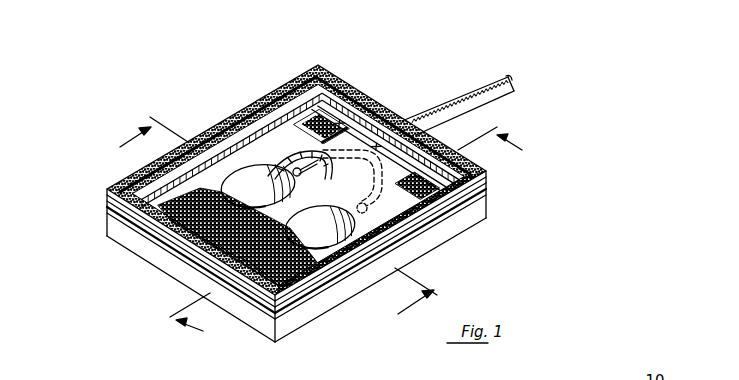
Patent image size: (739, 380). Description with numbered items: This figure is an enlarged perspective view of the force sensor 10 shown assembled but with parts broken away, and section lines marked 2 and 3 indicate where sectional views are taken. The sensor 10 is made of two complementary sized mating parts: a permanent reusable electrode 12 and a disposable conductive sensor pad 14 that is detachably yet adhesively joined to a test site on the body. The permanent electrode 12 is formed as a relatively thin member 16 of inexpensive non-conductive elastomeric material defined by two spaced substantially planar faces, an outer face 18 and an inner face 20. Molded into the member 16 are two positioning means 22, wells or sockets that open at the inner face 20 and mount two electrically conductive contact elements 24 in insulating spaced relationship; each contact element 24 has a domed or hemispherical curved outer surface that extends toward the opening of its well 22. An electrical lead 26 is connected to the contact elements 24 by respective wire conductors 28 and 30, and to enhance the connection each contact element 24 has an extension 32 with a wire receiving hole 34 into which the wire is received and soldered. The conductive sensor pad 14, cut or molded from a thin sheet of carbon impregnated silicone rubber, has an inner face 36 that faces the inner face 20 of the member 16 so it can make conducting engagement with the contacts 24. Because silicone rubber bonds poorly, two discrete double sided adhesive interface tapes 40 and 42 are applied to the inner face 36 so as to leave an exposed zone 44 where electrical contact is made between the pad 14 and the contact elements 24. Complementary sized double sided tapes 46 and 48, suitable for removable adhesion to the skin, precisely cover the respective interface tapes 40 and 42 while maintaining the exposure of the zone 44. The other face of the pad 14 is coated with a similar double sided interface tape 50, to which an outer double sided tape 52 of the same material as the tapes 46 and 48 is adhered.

The force sensor 10 is at (367, 41).
The permanent electrode 12 is at (291, 342).
The conductive sensor pad 14 is at (120, 184).
The member 16 is at (123, 247).
The outer face 18 is at (306, 326).
The inner face 20 is at (244, 307).
The positioning means 22 is at (213, 126).
The contact elements 24 is at (239, 196).
The electrical lead 26 is at (463, 92).
The electrical wire conductor 28 is at (505, 94).
The electrical wire conductor 30 is at (436, 107).
The extension 32 is at (243, 112).
The wire receiving hole 34 is at (279, 142).
The inner face 36 is at (170, 250).
The double sided adhesive interface tape 40 is at (108, 213).
The double sided adhesive interface tape 42 is at (492, 192).
The exposed zone 44 is at (405, 245).
The double sided tape 46 is at (107, 218).
The double sided tape 48 is at (489, 199).
The double sided adhesive interface tape 50 is at (492, 174).
The outer double sided tape 52 is at (305, 72).
The section line 2- 2 is at (269, 223).
The section line 3- 3 is at (353, 236).